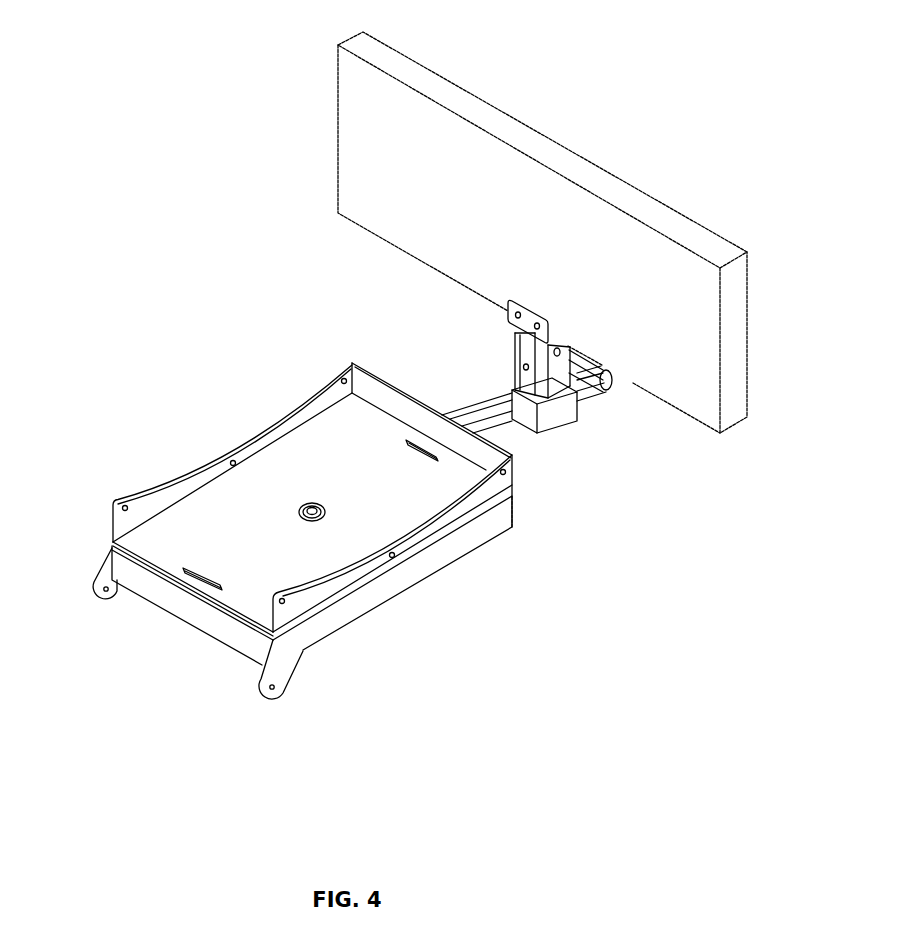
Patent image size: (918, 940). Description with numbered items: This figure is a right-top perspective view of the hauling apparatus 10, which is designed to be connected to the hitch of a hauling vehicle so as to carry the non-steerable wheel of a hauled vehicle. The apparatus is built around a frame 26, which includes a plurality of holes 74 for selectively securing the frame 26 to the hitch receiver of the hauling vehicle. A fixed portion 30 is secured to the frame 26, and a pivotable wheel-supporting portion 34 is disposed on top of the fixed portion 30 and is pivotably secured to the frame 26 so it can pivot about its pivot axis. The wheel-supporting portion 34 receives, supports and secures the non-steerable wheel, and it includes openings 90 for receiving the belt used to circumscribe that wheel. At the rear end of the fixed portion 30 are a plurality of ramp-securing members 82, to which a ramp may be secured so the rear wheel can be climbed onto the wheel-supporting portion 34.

The hauling apparatus 10 is at (200, 303).
The frame 26 is at (520, 437).
The fixed portion 30 is at (487, 528).
The pivotable wheel-supporting portion 34 is at (425, 532).
The holes 74 is at (608, 389).
The ramp-securing members 82 is at (107, 578).
The openings 90 is at (408, 441).